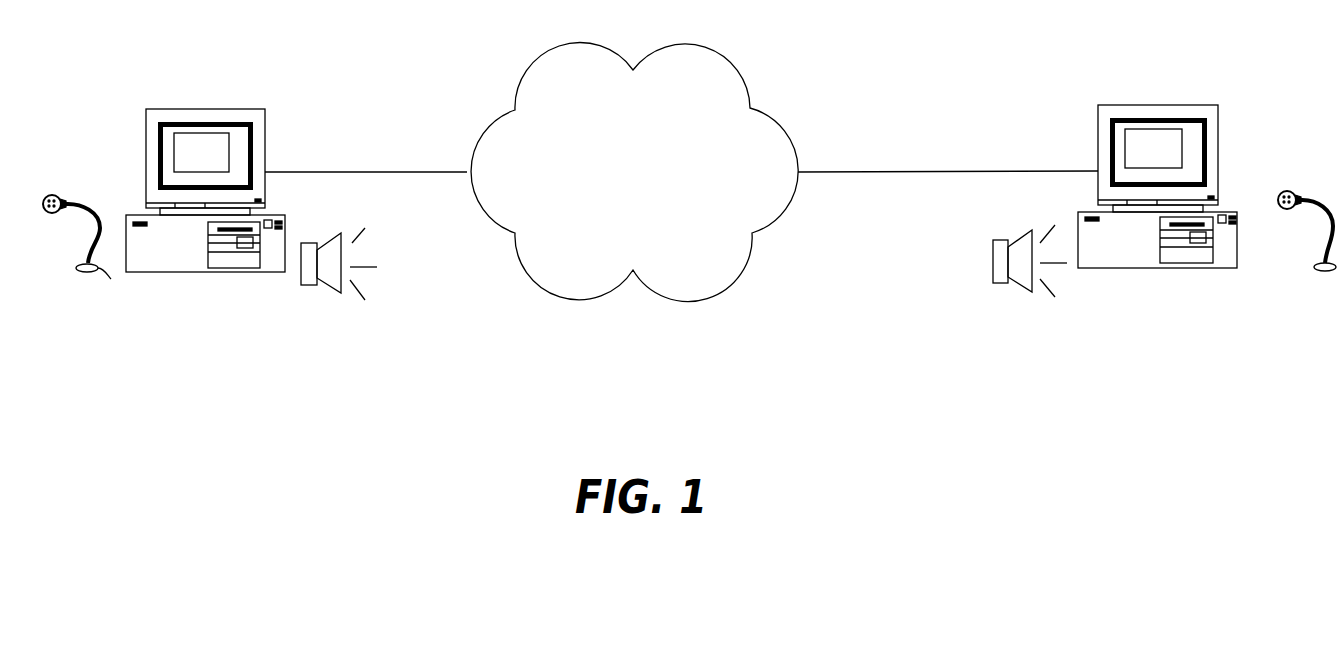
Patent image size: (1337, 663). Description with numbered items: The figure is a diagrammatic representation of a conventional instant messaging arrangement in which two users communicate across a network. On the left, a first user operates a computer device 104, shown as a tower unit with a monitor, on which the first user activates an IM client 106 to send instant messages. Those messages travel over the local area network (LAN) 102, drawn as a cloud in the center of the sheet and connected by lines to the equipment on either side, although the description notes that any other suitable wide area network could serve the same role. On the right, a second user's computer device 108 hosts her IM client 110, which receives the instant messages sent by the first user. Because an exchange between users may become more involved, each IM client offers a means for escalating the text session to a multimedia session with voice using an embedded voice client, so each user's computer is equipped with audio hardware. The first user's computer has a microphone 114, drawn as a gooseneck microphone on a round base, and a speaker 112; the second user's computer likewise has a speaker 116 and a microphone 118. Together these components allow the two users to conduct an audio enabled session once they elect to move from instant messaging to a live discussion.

The local area network (LAN) 102 is at (613, 197).
The computer device 104 is at (195, 272).
The IM client 106 is at (173, 150).
The computer device 108 is at (1157, 268).
The IM client 110 is at (1182, 150).
The speaker 112 is at (302, 292).
The microphone 114 is at (78, 275).
The speaker 116 is at (990, 285).
The microphone 118 is at (1312, 270).